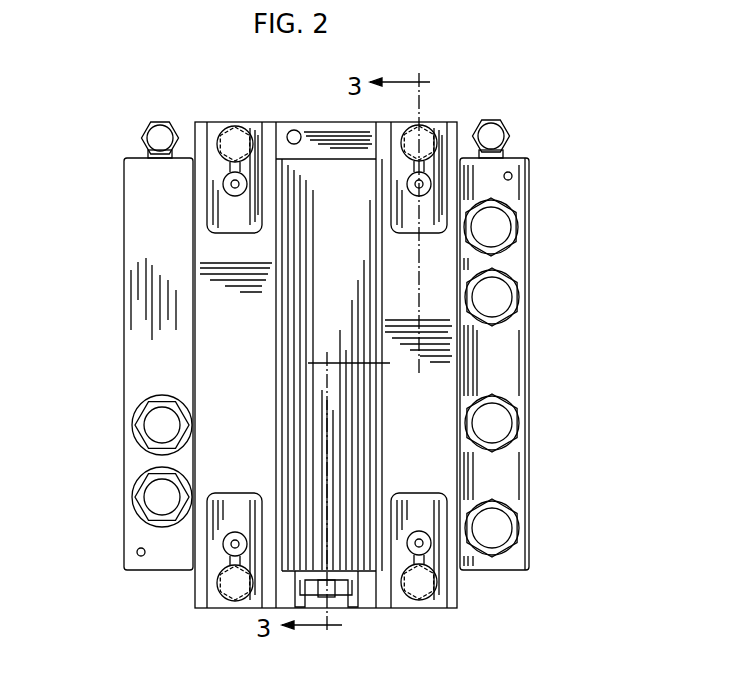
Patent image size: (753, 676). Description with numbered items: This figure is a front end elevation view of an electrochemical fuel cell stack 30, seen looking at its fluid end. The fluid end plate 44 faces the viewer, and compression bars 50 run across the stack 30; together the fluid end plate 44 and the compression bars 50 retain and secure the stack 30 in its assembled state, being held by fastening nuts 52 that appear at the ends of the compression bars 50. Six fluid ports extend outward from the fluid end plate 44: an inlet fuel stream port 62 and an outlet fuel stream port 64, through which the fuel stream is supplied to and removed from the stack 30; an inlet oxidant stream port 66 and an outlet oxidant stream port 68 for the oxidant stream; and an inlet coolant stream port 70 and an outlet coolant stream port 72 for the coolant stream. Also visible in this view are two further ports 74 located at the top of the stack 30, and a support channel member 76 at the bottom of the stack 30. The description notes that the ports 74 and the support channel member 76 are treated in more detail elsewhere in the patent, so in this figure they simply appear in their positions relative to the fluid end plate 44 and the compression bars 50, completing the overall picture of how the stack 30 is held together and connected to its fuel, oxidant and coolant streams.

The stack 30 is at (504, 579).
The fluid end plate 44 is at (522, 170).
The compression bars 50 is at (387, 247).
The fastening nuts 52 is at (405, 142).
The inlet fuel stream port 62 is at (150, 423).
The outlet fuel stream port 64 is at (153, 495).
The inlet oxidant stream port 66 is at (507, 425).
The outlet oxidant stream port 68 is at (508, 528).
The inlet coolant stream port 70 is at (503, 226).
The outlet coolant stream port 72 is at (508, 300).
The ports 74 is at (160, 136).
The support channel member 76 is at (355, 607).